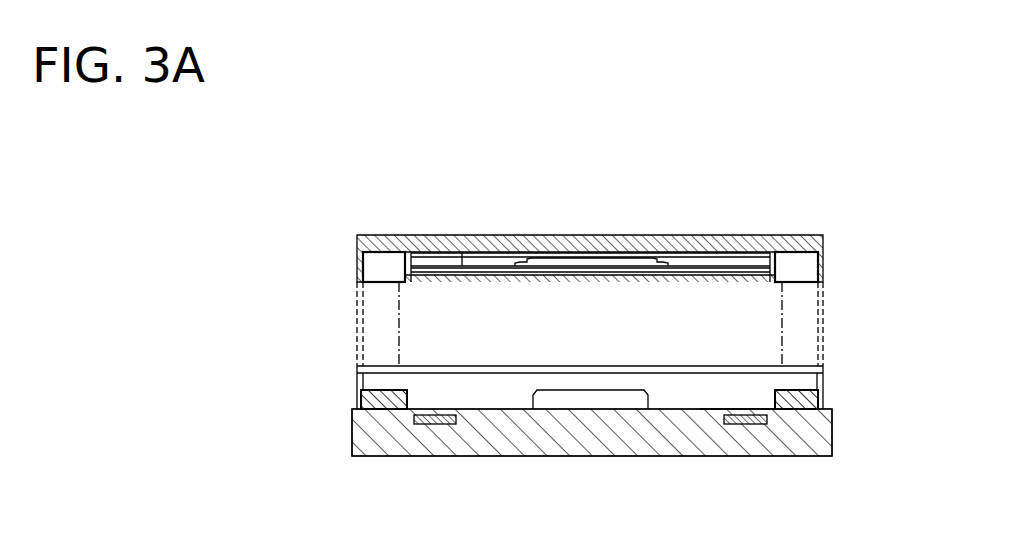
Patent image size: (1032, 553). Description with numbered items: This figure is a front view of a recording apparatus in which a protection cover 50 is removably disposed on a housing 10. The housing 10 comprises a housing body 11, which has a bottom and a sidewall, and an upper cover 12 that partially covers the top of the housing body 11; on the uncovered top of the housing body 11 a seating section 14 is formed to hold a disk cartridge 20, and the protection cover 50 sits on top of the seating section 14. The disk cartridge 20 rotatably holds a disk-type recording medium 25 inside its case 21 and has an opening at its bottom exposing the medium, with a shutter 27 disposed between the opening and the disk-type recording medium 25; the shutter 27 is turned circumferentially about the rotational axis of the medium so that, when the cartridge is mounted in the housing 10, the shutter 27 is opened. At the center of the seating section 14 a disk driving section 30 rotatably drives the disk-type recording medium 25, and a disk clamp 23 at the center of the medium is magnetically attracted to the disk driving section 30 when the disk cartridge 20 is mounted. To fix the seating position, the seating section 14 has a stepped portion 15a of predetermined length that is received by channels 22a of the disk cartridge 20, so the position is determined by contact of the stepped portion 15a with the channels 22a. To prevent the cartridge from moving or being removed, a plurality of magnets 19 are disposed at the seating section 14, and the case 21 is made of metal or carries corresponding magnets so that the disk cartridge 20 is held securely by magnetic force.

The housing 10 is at (347, 411).
The housing body 11 is at (668, 445).
The upper cover 12 is at (390, 365).
The seating section 14 is at (712, 409).
The stepped portion 15a is at (400, 394).
The magnets 19 is at (443, 424).
The disk cartridge 20 is at (393, 290).
The case 21 is at (851, 271).
The channels 22a is at (393, 237).
The disk clamp 23 is at (555, 258).
The disk-type recording medium 25 is at (447, 237).
The shutter 27 is at (677, 277).
The disk driving section 30 is at (577, 403).
The protection cover 50 is at (358, 236).